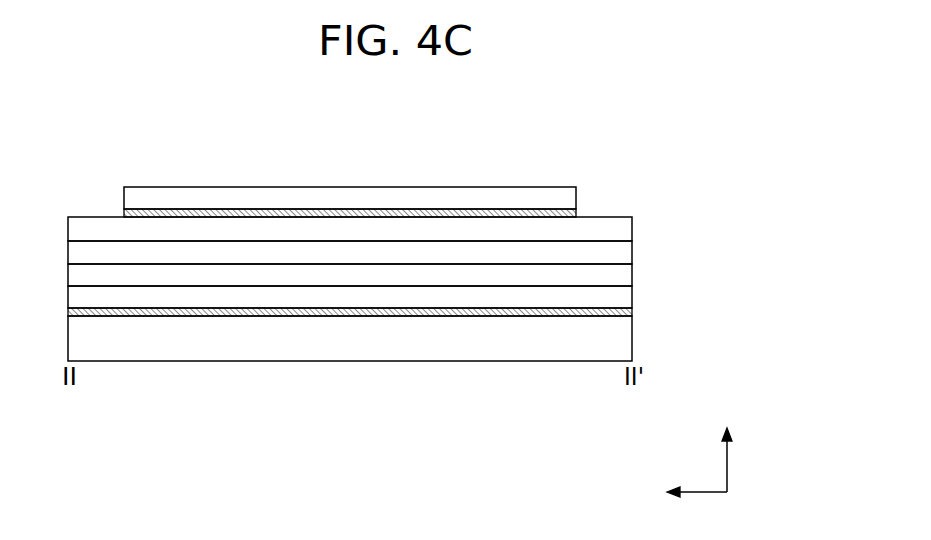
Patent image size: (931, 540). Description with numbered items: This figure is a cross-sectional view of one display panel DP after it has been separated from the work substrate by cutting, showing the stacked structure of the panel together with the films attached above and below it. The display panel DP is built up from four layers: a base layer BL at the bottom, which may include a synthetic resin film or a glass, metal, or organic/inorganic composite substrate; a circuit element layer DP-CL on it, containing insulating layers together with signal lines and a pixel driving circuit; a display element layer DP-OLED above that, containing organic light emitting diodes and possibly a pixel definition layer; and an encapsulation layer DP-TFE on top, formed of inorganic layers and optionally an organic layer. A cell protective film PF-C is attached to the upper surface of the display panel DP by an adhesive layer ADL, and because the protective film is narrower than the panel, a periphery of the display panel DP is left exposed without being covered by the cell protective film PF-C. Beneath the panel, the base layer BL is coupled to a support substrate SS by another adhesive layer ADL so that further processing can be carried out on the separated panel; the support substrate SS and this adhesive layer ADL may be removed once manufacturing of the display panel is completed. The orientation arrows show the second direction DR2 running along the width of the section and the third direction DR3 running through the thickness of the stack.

The cell protective film PF-C is at (433, 198).
The adhesive layer ADL is at (345, 211).
The display panel DP is at (442, 262).
The encapsulation layer DP-TFE is at (632, 225).
The display element layer DP-OLED is at (632, 249).
The circuit element layer DP-CL is at (632, 272).
The base layer BL is at (632, 295).
The support substrate SS is at (632, 339).
The third direction DR3 is at (726, 450).
The second direction DR2 is at (675, 491).